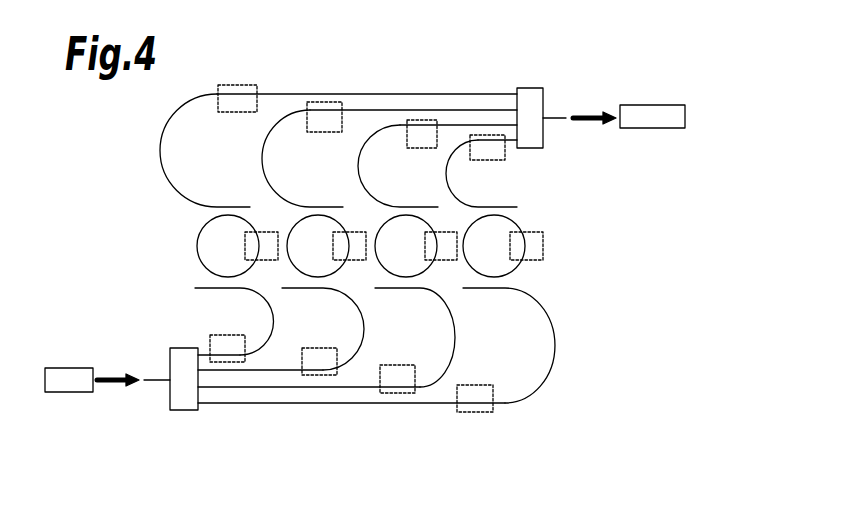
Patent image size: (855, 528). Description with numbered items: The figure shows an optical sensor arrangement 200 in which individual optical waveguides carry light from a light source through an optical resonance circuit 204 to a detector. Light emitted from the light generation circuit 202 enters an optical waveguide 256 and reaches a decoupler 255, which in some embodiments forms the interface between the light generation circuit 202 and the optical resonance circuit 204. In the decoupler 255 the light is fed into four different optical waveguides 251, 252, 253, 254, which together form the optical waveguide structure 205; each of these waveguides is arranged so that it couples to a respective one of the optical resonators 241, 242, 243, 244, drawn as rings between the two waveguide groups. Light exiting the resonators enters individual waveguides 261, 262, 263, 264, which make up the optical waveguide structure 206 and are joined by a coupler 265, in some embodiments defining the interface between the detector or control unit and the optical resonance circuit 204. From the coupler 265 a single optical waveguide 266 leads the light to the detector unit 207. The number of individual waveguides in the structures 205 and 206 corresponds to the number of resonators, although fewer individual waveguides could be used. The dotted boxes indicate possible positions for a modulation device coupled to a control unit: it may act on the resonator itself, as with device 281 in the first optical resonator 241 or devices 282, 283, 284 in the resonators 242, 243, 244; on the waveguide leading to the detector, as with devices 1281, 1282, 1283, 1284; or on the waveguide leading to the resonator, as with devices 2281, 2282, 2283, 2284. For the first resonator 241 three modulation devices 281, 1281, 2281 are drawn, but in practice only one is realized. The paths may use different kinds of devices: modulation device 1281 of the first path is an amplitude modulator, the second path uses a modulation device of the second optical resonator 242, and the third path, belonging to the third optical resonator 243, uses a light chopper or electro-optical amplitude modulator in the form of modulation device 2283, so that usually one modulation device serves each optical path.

The optical sensor arrangement 200 is at (146, 143).
The light generation circuit 202 is at (52, 368).
The optical resonance circuit 204 is at (432, 253).
The optical waveguide structure 205 is at (320, 418).
The optical waveguide structure 206 is at (338, 89).
The detector unit 207 is at (660, 105).
The first optical resonator 241 is at (228, 246).
The second optical resonator 242 is at (318, 246).
The third optical resonator 243 is at (406, 246).
The optical resonator 244 is at (494, 246).
The optical waveguide 251 is at (270, 318).
The optical waveguide 252 is at (360, 324).
The optical waveguide 253 is at (452, 337).
The optical waveguide 254 is at (553, 347).
The decoupler 255 is at (172, 412).
The optical waveguide 256 is at (155, 378).
The waveguide 261 is at (158, 150).
The waveguide 262 is at (265, 157).
The waveguide 263 is at (360, 163).
The waveguide 264 is at (448, 175).
The coupler 265 is at (523, 86).
The optical waveguide 266 is at (560, 117).
The modulation device 281 is at (261, 246).
The modulation device 282 is at (349, 246).
The modulation device 283 is at (441, 246).
The modulation device 284 is at (526, 246).
The modulation device 1281 is at (237, 98).
The modulation device 1282 is at (324, 117).
The modulation device 1283 is at (422, 134).
The modulation device 1284 is at (487, 147).
The modulation device 2281 is at (227, 348).
The modulation device 2282 is at (319, 361).
The modulation device 2283 is at (397, 379).
The modulation device 2284 is at (475, 398).